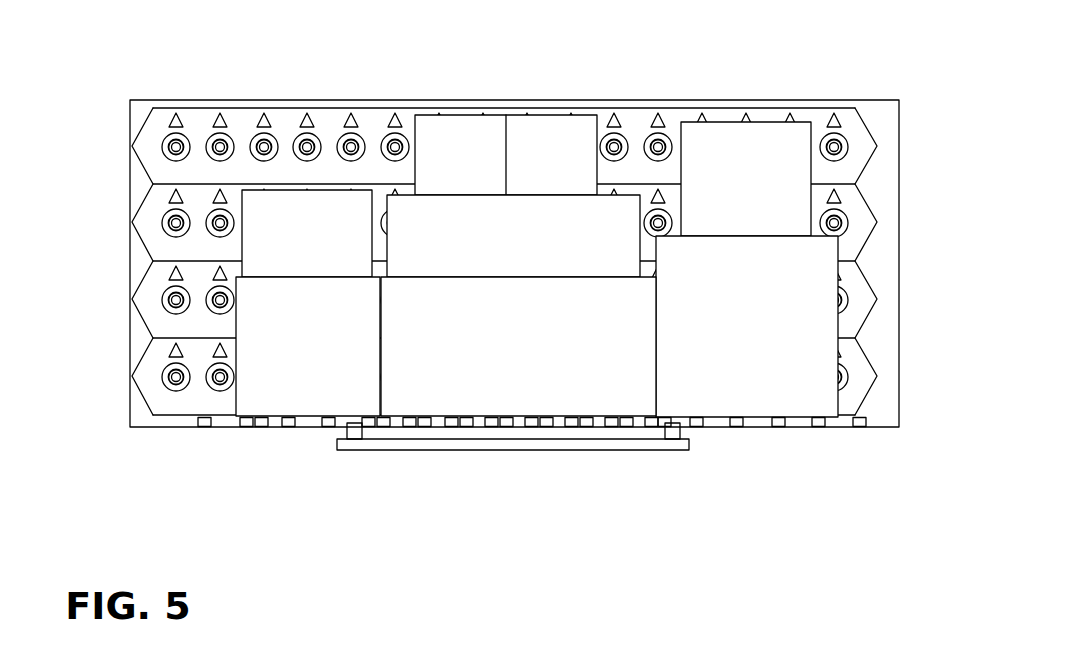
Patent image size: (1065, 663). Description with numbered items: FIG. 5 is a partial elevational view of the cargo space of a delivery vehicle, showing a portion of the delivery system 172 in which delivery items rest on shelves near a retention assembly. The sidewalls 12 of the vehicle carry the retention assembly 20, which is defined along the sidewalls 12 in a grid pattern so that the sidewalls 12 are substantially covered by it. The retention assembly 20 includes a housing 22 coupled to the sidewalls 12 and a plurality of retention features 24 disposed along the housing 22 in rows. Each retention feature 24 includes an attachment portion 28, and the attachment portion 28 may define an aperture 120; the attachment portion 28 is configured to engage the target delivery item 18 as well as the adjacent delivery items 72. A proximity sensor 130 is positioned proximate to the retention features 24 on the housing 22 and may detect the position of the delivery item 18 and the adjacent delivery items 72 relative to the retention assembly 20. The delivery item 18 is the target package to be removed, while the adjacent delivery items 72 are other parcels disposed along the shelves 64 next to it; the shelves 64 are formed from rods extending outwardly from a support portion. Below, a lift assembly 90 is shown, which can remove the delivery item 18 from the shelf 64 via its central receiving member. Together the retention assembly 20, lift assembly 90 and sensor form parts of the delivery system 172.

The delivery system 172 is at (128, 66).
The sidewalls 12 is at (882, 178).
The retention assembly 20 is at (155, 141).
The housing 22 is at (860, 130).
The retention feature 24 is at (183, 140).
The attachment portion 28 is at (357, 140).
The aperture 120 is at (308, 143).
The proximity sensor 130 is at (263, 120).
The adjacent delivery items 72 is at (478, 138).
The delivery item 18 is at (437, 378).
The shelves 64 is at (862, 427).
The lift assembly 90 is at (602, 452).